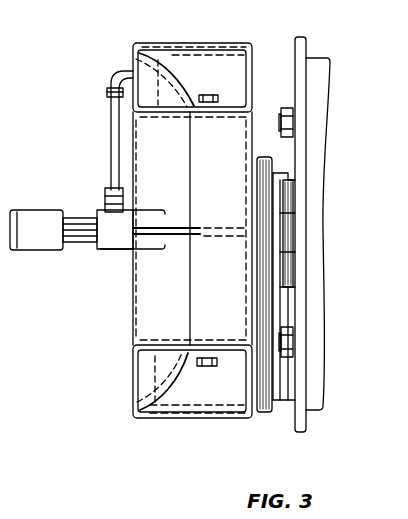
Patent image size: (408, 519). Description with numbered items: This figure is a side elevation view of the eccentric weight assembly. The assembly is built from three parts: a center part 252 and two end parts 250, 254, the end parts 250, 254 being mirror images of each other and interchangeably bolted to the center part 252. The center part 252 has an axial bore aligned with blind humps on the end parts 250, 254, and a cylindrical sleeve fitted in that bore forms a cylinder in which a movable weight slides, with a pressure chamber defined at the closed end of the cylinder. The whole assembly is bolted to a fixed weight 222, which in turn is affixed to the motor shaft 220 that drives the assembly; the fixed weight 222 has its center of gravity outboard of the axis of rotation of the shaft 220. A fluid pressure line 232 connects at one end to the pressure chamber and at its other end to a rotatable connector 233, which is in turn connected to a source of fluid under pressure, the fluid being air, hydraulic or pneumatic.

The end part 250 is at (172, 43).
The fluid pressure line 232 is at (110, 127).
The rotatable connector 233 is at (41, 218).
The center part 252 is at (147, 296).
The motor shaft 220 is at (290, 243).
The end part 254 is at (176, 419).
The fixed weight 222 is at (266, 414).